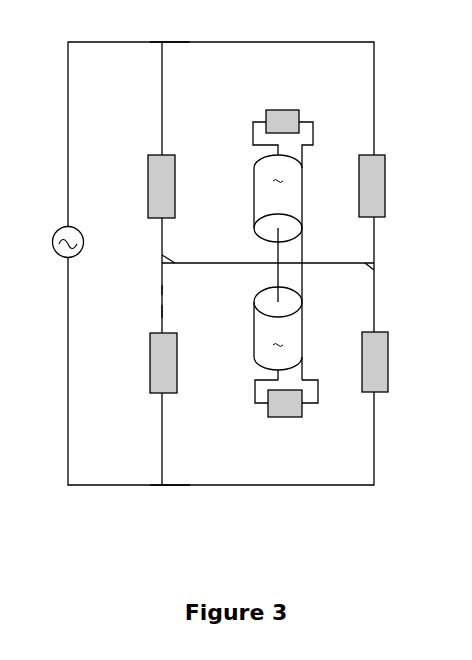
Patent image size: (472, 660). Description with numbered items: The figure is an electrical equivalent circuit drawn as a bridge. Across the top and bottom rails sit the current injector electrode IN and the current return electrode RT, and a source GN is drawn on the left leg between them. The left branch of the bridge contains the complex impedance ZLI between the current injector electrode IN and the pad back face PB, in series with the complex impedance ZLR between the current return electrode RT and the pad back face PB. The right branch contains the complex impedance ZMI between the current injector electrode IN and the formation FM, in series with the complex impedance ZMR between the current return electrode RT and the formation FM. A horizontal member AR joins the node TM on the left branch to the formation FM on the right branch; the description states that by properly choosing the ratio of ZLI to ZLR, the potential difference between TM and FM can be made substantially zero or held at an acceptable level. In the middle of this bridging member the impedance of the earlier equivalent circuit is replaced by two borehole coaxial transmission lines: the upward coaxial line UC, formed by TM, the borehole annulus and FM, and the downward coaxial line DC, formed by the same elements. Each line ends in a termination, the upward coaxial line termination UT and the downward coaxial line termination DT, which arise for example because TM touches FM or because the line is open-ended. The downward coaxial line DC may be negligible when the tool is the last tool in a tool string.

The current injector electrode IN is at (170, 30).
The current return electrode RT is at (170, 497).
The signal generator GN is at (56, 243).
The complex impedance between the current injector electrode and the pad back face ZLI is at (149, 186).
The complex impedance between the current return electrode and the pad back face ZLR is at (145, 363).
The complex impedance between the current injector electrode and the formation ZMI is at (391, 186).
The complex impedance between the current return electrode and the formation ZMR is at (399, 362).
The TM node TM is at (153, 263).
The measurement branch AR is at (148, 287).
The pad back face PB is at (148, 310).
The formation FM is at (383, 271).
The upward coaxial line termination UT is at (283, 128).
The upward coaxial line UC is at (265, 267).
The downward coaxial line DC is at (266, 328).
The downward coaxial line termination DT is at (286, 404).